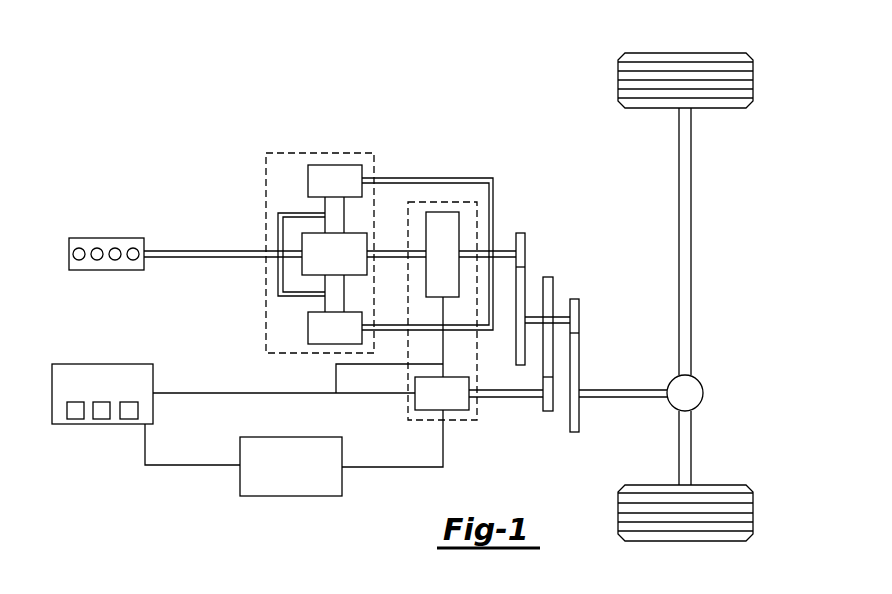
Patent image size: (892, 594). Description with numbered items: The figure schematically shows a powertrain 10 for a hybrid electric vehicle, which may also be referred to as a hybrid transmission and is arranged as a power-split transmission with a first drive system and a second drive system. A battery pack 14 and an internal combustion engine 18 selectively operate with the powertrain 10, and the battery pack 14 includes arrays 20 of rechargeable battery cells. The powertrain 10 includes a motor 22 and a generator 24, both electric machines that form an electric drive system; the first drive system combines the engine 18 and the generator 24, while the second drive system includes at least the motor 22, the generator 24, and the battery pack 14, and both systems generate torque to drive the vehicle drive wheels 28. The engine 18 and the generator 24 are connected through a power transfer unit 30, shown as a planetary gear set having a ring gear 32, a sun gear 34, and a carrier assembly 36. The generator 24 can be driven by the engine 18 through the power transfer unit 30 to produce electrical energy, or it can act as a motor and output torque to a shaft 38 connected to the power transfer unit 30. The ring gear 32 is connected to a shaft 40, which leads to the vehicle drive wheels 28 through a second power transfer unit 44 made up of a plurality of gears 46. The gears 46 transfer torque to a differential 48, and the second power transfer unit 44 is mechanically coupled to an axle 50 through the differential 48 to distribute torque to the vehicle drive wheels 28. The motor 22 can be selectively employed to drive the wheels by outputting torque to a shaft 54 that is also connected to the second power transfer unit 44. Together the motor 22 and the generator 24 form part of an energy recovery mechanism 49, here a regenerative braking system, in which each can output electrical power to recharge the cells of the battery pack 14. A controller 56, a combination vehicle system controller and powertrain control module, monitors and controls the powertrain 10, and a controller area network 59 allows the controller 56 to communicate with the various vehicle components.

The powertrain 10 is at (138, 84).
The battery pack 14 is at (102, 364).
The internal combustion engine 18 is at (70, 238).
The arrays of rechargeable battery cells 20 is at (75, 419).
The motor 22 is at (457, 410).
The generator 24 is at (459, 223).
The vehicle drive wheels 28 is at (687, 53).
The power transfer unit 30 is at (374, 153).
The ring gear 32 is at (308, 180).
The sun gear 34 is at (352, 276).
The carrier assembly 36 is at (278, 235).
The shaft 38 is at (395, 250).
The shaft 40 is at (501, 259).
The second power transfer unit 44 is at (589, 329).
The gears 46 is at (525, 245).
The differential 48 is at (703, 393).
The energy recovery mechanism 49 is at (443, 202).
The axle 50 is at (691, 243).
The shaft 54 is at (505, 398).
The controller 56 is at (291, 496).
The controller area network 59 is at (391, 467).